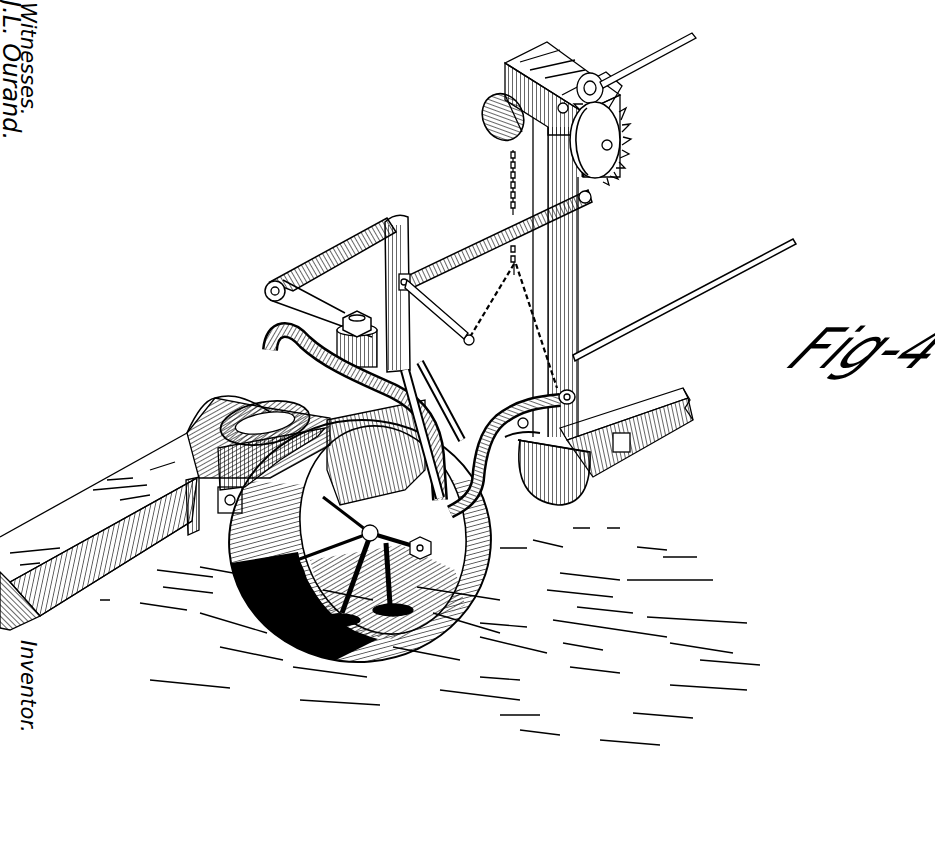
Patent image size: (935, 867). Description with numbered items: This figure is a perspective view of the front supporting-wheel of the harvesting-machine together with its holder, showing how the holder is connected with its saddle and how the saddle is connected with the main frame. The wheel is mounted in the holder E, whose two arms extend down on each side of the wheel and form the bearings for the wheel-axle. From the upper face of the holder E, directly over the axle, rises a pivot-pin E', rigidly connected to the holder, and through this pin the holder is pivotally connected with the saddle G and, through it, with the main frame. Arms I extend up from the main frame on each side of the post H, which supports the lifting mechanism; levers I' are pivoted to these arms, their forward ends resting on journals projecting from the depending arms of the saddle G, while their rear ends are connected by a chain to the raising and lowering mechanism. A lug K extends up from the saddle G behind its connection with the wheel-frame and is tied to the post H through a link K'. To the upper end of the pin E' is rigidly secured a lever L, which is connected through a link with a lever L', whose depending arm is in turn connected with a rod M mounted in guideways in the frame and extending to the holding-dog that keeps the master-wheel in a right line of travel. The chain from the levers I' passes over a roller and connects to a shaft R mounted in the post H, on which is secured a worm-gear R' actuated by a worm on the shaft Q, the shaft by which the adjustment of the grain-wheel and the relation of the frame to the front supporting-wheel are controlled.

The saddle G is at (254, 380).
The holder E is at (360, 541).
The post H is at (579, 240).
The shaft R is at (531, 109).
The shaft Q is at (648, 60).
The worm-gear R' is at (619, 143).
The link K' is at (497, 240).
The lever L' is at (404, 279).
The lever L is at (304, 308).
The pivot-pin E' is at (357, 316).
The lug K is at (436, 308).
The arms I is at (430, 433).
The levers I' is at (489, 375).
The rod M is at (684, 300).